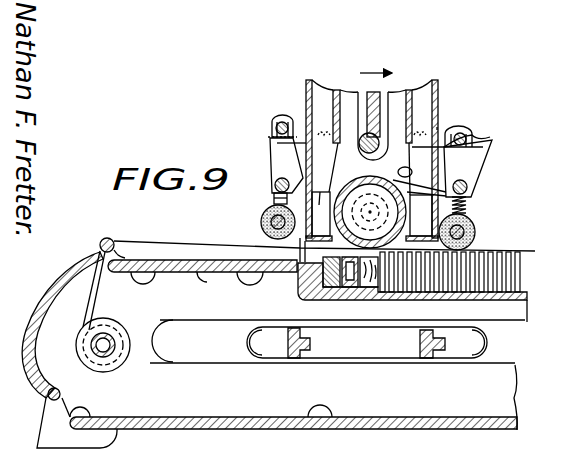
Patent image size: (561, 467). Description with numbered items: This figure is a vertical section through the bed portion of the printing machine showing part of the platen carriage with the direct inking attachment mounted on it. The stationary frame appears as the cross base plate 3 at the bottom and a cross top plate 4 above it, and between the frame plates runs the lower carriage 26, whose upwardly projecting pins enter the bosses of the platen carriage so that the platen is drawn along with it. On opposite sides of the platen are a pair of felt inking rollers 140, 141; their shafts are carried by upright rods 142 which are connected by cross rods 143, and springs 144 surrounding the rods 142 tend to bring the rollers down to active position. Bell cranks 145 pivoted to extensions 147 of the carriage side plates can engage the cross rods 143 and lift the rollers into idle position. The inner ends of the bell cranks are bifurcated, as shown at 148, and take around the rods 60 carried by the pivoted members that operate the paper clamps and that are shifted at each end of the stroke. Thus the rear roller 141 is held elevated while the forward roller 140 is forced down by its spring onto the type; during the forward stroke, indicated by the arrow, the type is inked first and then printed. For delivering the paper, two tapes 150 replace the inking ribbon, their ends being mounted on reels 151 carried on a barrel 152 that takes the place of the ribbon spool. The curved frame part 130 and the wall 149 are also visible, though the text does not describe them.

The cross base plate 3 is at (293, 396).
The cross top plate 4 is at (317, 287).
The lower carriage 26 is at (420, 346).
The rod 60 is at (321, 206).
The curved frame arm 130 is at (50, 340).
The felt inking roller 140 is at (475, 229).
The felt inking roller 141 is at (261, 222).
The upright rod 142 is at (284, 116).
The cross rod 143 is at (272, 131).
The spring 144 is at (274, 189).
The bell crank 145 is at (288, 152).
The extension 147 is at (447, 130).
The bifurcated inner end 148 is at (340, 188).
The side wall 149 is at (436, 126).
The tape 150 is at (176, 241).
The reel 151 is at (118, 363).
The barrel 152 is at (110, 340).